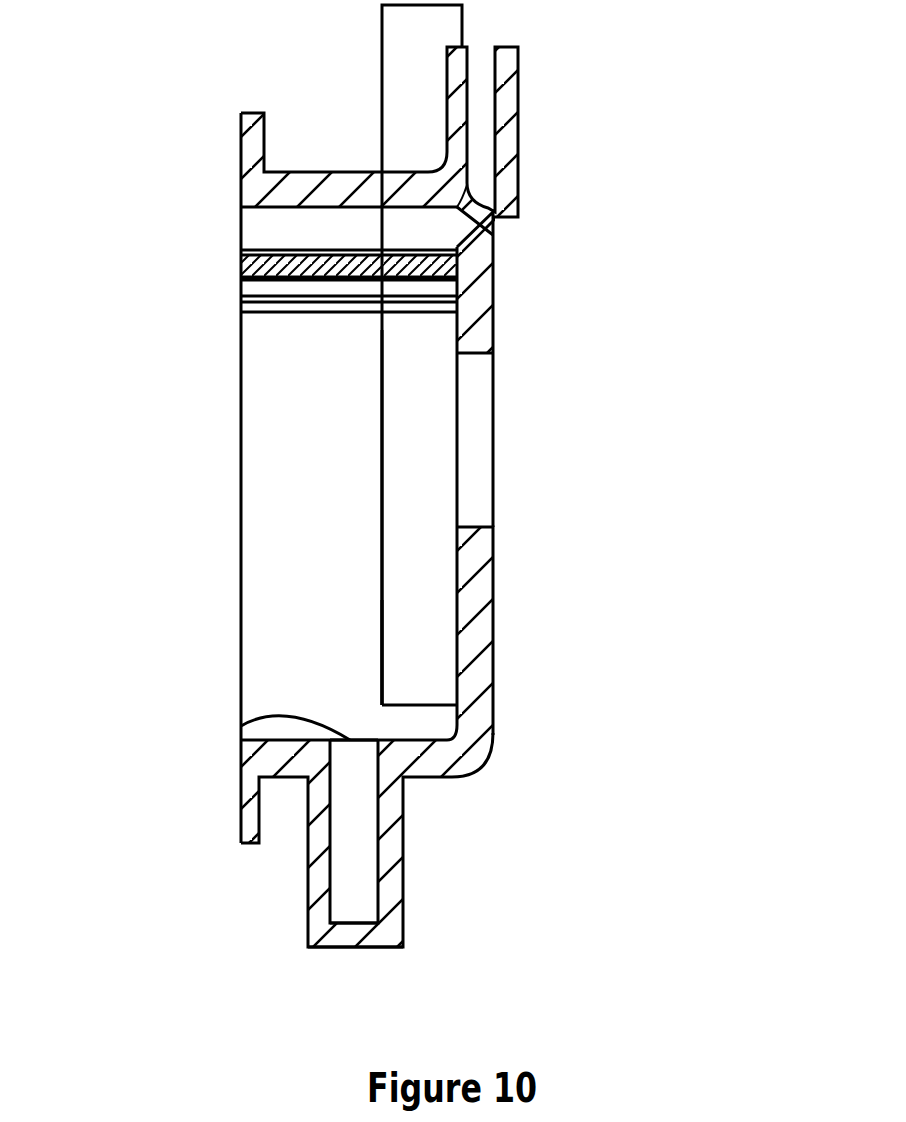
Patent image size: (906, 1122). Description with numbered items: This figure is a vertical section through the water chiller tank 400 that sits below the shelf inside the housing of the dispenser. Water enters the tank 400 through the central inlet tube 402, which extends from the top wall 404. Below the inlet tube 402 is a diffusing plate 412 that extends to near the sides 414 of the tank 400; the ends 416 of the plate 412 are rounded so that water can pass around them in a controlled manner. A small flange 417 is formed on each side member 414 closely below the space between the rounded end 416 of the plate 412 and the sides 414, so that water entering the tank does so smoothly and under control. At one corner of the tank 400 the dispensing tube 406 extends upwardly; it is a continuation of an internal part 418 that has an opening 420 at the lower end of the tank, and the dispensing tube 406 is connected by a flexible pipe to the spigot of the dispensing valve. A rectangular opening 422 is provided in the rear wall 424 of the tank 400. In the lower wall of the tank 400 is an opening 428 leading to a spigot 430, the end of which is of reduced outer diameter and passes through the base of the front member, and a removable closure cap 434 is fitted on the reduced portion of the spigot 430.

The water chiller tank 400 is at (285, 614).
The central inlet tube 402 is at (517, 100).
The top wall 404 is at (320, 187).
The dispensing tube 406 is at (403, 32).
The diffusing plate 412 is at (240, 270).
The sides of the tank 414 is at (365, 674).
The rounded end of the plate 416 is at (420, 242).
The small flange 417 is at (353, 312).
The internal part 418 is at (400, 492).
The opening 420 is at (450, 708).
The rectangular opening 422 is at (495, 355).
The rear wall 424 is at (493, 593).
The opening 428 is at (240, 728).
The spigot 430 is at (410, 827).
The removable closure cap 434 is at (403, 910).